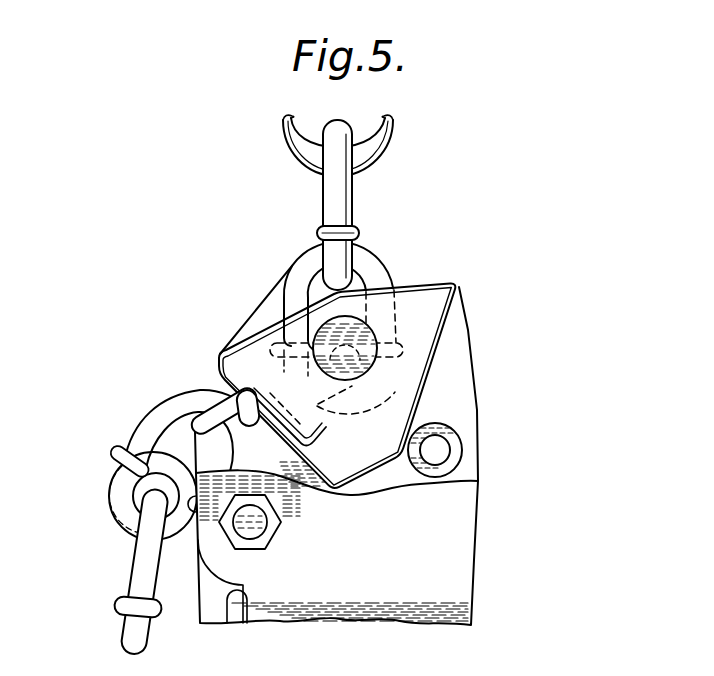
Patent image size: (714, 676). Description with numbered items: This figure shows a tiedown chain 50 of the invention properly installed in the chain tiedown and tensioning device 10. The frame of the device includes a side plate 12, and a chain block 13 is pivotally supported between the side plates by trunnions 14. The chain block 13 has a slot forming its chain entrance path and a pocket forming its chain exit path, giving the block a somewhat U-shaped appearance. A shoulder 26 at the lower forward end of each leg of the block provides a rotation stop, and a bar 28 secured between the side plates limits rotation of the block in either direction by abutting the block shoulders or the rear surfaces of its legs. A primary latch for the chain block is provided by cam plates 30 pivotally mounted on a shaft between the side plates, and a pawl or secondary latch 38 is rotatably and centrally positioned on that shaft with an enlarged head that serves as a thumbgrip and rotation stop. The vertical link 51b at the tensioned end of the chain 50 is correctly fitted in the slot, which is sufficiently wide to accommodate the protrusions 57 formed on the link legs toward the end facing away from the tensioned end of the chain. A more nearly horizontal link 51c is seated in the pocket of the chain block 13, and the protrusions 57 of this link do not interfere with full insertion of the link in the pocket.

The chain tiedown and tensioning device 10 is at (478, 588).
The side plate 12 is at (405, 599).
The chain block 13 is at (437, 357).
The trunnions 14 is at (367, 328).
The shoulder 26 is at (316, 458).
The bar 28 is at (462, 447).
The cam plates 30 is at (313, 476).
The pawl or secondary latch 38 is at (348, 422).
The tiedown chain 50 is at (356, 189).
The vertical link 51b is at (368, 252).
The horizontal link 51c is at (195, 433).
The protrusions 57 is at (318, 232).